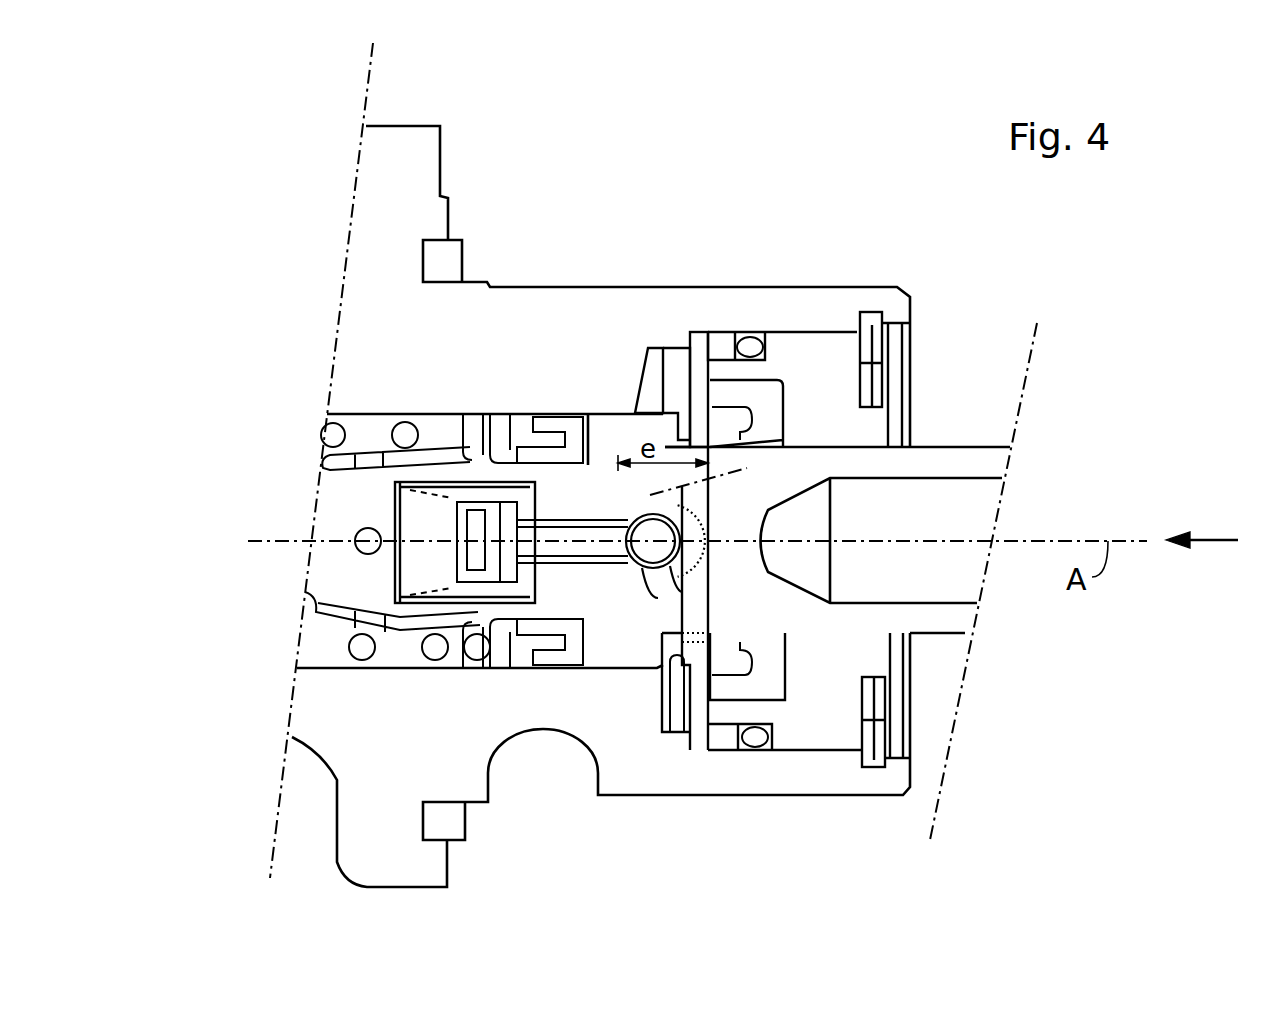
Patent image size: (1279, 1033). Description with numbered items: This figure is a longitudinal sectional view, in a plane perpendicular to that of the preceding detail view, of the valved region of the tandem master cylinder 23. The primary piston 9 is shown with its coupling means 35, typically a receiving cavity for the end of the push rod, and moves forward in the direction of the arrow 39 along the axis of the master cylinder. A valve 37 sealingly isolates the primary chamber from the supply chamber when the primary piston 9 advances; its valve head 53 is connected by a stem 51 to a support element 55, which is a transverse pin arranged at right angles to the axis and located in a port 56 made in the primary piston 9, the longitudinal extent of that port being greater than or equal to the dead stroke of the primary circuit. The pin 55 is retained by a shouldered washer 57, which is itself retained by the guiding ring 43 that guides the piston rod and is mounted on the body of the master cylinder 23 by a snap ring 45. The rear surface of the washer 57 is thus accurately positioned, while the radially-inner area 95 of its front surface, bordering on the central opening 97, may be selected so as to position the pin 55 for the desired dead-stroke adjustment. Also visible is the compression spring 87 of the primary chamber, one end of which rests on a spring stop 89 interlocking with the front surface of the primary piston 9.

The tandem master cylinder 23 is at (626, 128).
The shouldered washer 57 is at (701, 323).
The stem 51 is at (603, 520).
The compression spring 87 is at (405, 422).
The guiding ring 43 is at (832, 388).
The primary piston 9 is at (951, 436).
The arrow 39 is at (1212, 540).
The valve head 53 is at (457, 530).
The coupling means 35 is at (934, 528).
The spring stop 89 is at (305, 592).
The support element 55 is at (692, 600).
The port 56 is at (656, 585).
The central opening 97 is at (690, 618).
The snap ring 45 is at (873, 738).
The radially-inner area 95 is at (675, 735).
The valve 37 is at (559, 588).